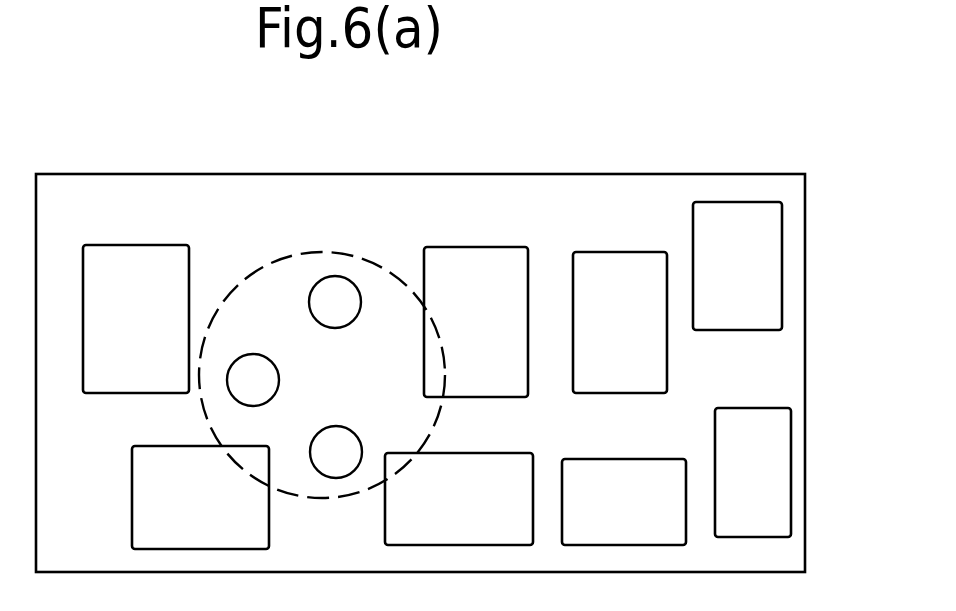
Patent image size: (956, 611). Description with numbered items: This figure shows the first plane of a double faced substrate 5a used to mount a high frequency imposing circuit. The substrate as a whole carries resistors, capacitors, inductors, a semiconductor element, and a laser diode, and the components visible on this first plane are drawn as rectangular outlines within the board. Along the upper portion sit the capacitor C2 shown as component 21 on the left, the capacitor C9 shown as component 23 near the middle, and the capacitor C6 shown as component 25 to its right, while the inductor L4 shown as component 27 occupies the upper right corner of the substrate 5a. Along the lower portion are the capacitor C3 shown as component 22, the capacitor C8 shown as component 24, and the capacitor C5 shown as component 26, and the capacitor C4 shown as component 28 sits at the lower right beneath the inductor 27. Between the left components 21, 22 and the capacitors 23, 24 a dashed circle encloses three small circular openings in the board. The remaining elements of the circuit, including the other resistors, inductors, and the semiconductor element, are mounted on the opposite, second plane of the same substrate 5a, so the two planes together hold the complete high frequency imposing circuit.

The double faced substrate 5a is at (790, 346).
The capacitor C2 21 is at (136, 319).
The capacitor C3 22 is at (200, 497).
The capacitor C9 23 is at (476, 322).
The capacitor C8 24 is at (459, 499).
The capacitor C6 25 is at (620, 322).
The capacitor C5 26 is at (624, 502).
The inductor L4 27 is at (737, 266).
The capacitor C4 28 is at (753, 472).